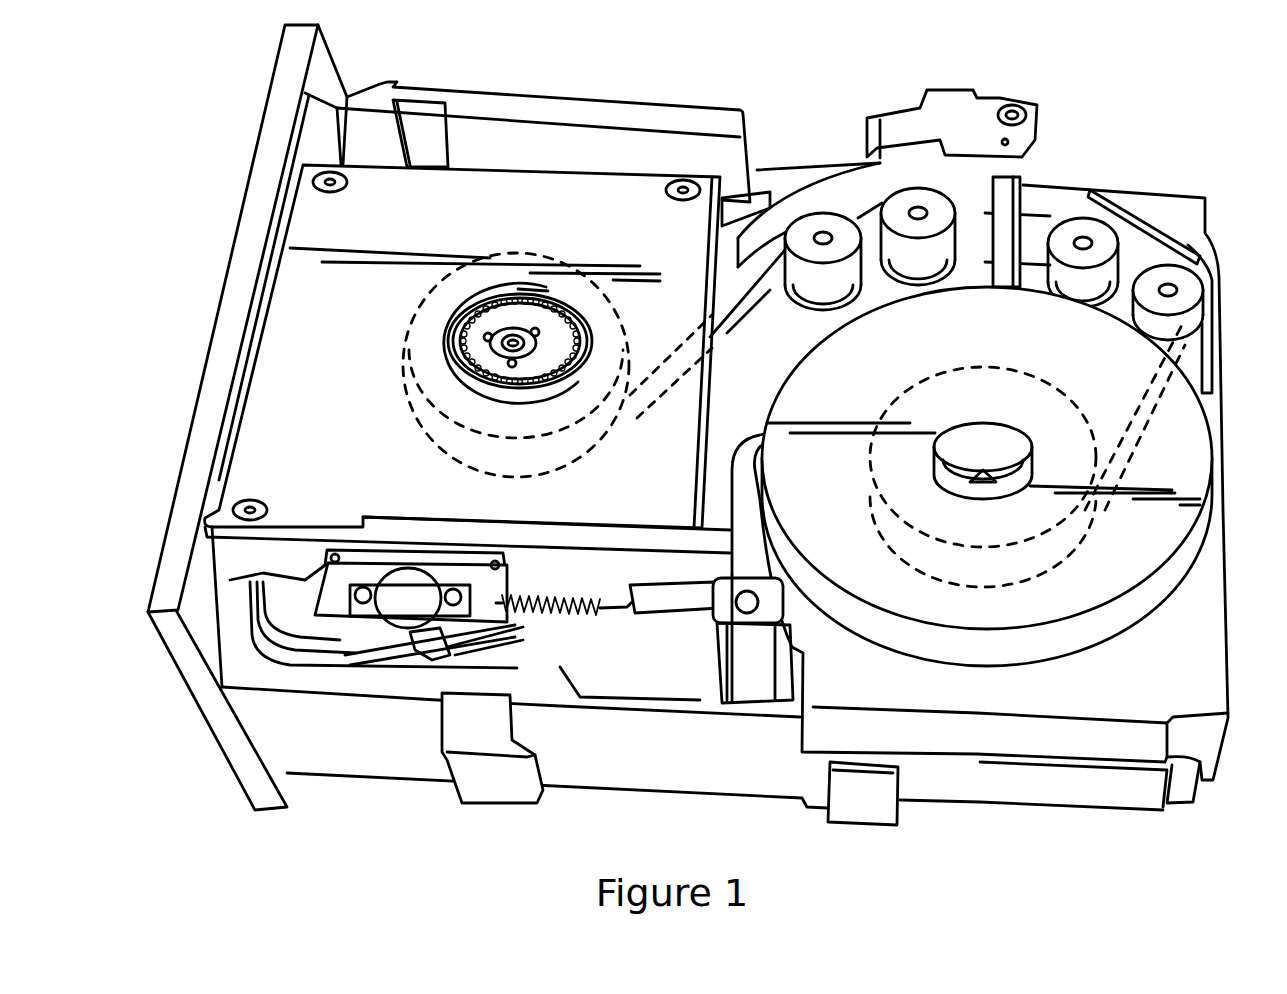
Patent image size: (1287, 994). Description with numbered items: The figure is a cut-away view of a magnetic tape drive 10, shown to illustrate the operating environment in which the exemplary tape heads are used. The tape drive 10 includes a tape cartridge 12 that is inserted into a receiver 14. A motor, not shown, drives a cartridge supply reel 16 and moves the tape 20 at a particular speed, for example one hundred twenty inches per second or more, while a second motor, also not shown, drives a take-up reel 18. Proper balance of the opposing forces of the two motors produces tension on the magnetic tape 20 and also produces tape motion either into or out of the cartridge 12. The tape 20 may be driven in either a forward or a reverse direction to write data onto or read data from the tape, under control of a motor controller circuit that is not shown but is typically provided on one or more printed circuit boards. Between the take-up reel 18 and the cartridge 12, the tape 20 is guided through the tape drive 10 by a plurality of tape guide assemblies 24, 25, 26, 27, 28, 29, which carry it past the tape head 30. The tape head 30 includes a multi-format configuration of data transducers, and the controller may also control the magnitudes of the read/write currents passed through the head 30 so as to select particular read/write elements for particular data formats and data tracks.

The magnetic tape drive 10 is at (720, 425).
The tape cartridge 12 is at (285, 310).
The receiver 14 is at (253, 342).
The cartridge supply reel 16 is at (547, 297).
The take-up reel 18 is at (1053, 422).
The tape 20 is at (977, 217).
The tape guide assembly 24 is at (820, 218).
The tape guide assembly 25 is at (917, 211).
The tape guide assembly 26 is at (1100, 228).
The tape guide assembly 27 is at (1185, 272).
The tape guide assembly 28 is at (1152, 227).
The tape guide assembly 29 is at (779, 227).
The tape head 30 is at (1013, 177).